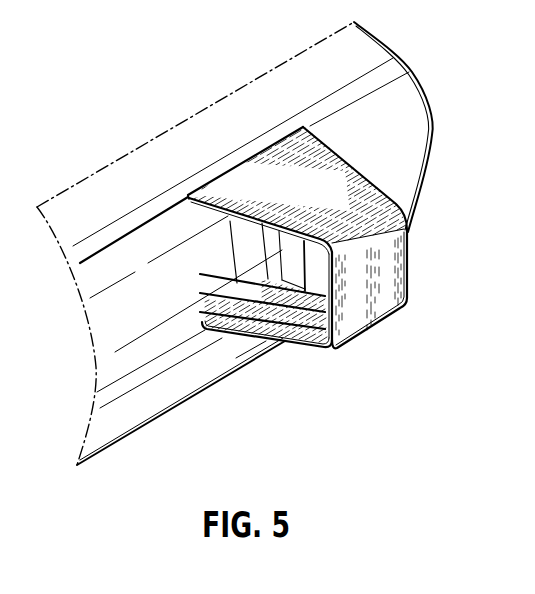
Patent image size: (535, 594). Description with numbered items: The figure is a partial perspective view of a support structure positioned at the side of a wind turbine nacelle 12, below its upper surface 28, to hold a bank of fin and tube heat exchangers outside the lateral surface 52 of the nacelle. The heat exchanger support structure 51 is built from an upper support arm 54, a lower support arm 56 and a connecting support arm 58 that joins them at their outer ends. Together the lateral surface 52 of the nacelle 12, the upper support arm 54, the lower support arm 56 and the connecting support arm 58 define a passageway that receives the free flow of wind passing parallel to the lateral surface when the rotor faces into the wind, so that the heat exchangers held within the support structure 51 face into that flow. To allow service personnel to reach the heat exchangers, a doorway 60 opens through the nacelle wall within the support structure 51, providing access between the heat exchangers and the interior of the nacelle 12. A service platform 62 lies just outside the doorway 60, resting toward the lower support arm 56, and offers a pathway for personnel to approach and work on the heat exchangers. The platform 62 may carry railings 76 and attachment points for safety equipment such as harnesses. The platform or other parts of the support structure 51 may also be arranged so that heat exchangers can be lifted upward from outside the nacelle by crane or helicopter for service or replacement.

The nacelle 12 is at (115, 153).
The upper surface 28 is at (307, 93).
The lateral surface 52 is at (398, 139).
The heat exchanger support structure 51 is at (327, 273).
The upper support arm 54 is at (316, 189).
The connecting support arm 58 is at (379, 285).
The doorway 60 is at (246, 250).
The lower support arm 56 is at (310, 334).
The service platform 62 is at (277, 332).
The railings 76 is at (237, 277).